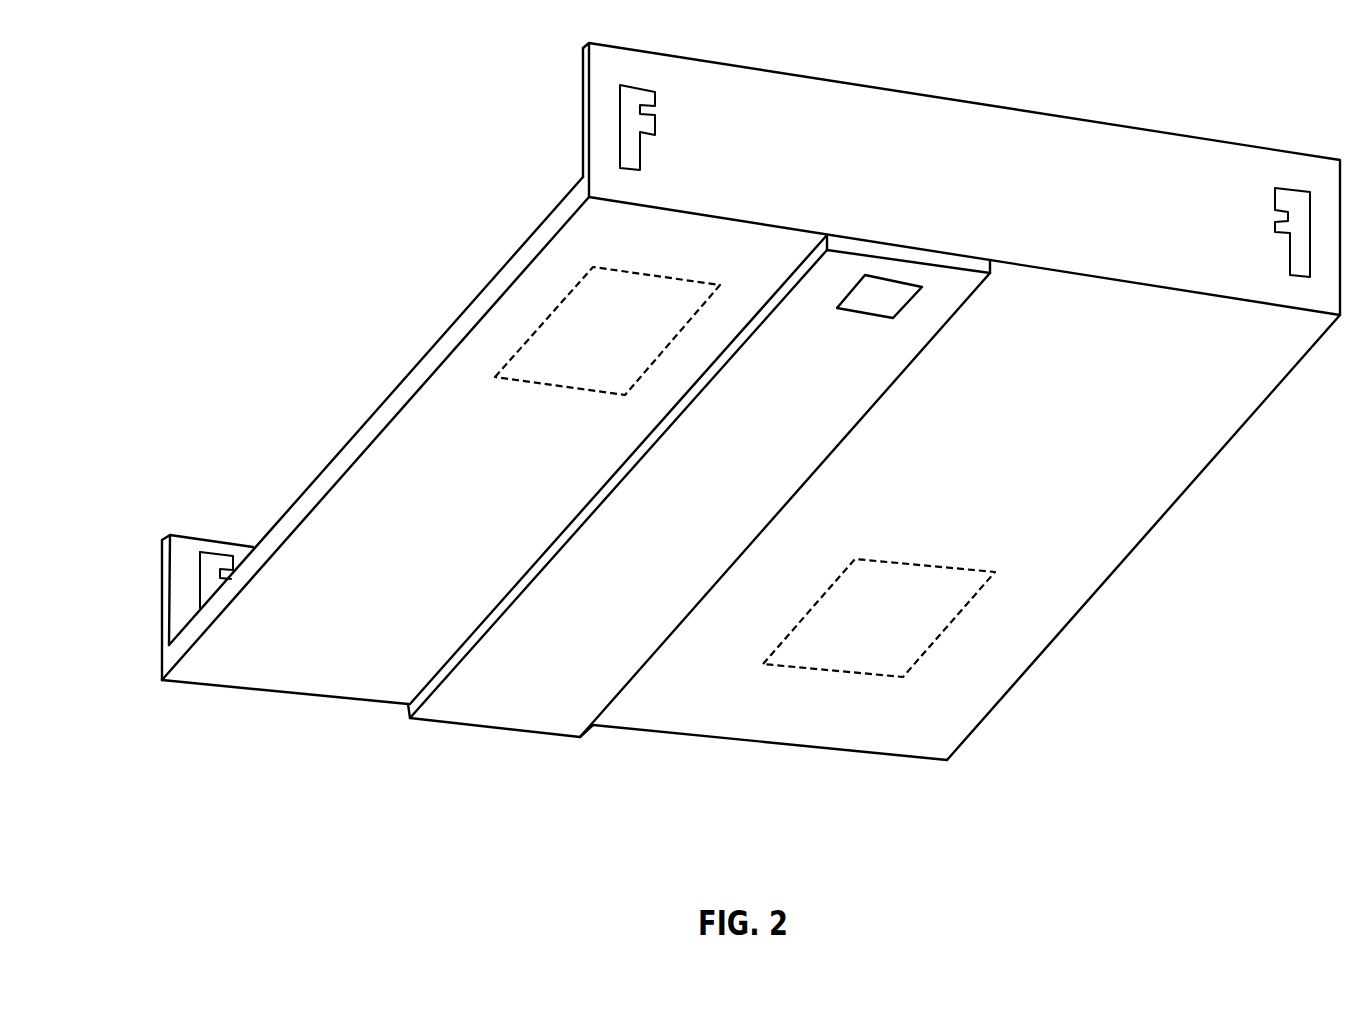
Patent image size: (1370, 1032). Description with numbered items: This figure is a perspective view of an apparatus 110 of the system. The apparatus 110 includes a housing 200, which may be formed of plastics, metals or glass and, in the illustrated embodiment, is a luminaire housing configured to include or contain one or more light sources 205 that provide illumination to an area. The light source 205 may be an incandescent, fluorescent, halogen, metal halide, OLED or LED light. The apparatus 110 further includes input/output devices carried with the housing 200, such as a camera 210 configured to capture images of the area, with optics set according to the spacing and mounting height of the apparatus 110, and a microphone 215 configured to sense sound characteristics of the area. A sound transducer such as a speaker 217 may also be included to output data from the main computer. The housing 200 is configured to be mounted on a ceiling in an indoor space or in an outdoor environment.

The apparatus 110 is at (264, 50).
The housing 200 is at (1205, 152).
The light source 205 is at (563, 690).
The camera 210 is at (882, 330).
The microphone 215 is at (945, 628).
The speaker 217 is at (540, 317).